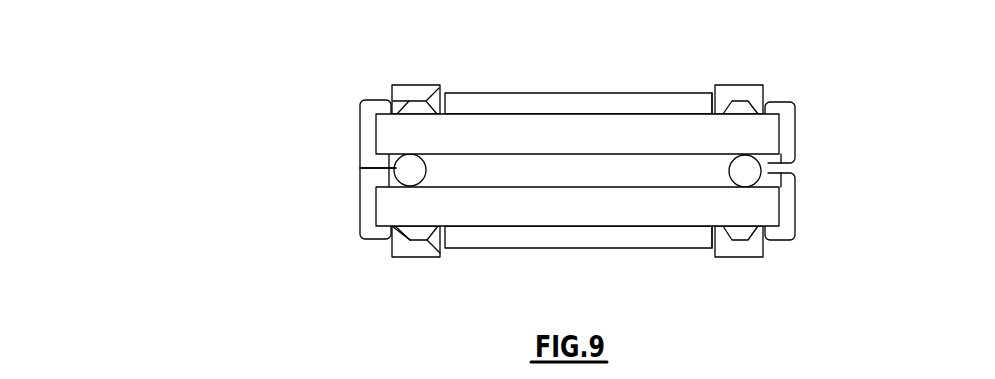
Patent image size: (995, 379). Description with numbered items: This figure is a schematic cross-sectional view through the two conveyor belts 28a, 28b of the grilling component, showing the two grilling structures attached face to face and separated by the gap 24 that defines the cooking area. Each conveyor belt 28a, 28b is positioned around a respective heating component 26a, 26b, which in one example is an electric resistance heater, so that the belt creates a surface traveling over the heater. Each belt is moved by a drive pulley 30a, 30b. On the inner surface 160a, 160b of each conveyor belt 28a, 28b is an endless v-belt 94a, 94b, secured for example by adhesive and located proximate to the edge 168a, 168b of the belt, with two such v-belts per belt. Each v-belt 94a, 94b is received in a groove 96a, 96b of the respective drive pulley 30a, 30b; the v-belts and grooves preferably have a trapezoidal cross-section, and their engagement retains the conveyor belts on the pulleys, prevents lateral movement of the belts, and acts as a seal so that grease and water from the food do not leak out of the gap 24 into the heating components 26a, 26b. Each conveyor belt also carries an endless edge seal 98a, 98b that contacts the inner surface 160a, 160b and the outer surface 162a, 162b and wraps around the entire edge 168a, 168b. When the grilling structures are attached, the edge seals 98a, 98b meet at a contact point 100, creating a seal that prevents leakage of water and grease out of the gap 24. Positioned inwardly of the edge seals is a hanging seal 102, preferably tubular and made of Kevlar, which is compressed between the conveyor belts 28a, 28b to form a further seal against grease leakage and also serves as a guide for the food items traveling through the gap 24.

The gap 24 is at (577, 174).
The heating component 26a is at (603, 242).
The heating component 26b is at (618, 107).
The conveyor belt 28a is at (505, 213).
The conveyor belt 28b is at (513, 132).
The drive pulley 30a is at (413, 240).
The drive pulley 30b is at (428, 90).
The v-belt 94a is at (408, 234).
The v-belt 94b is at (418, 102).
The groove 96a is at (408, 240).
The groove 96b is at (403, 106).
The edge seal 98a is at (360, 205).
The edge seal 98b is at (360, 132).
The contact point 100 is at (360, 168).
The hanging seal 102 is at (750, 171).
The inner surface 160a is at (657, 188).
The inner surface 160b is at (630, 155).
The outer surface 162a is at (532, 222).
The outer surface 162b is at (587, 116).
The edge 168a is at (795, 207).
The edge 168b is at (795, 132).